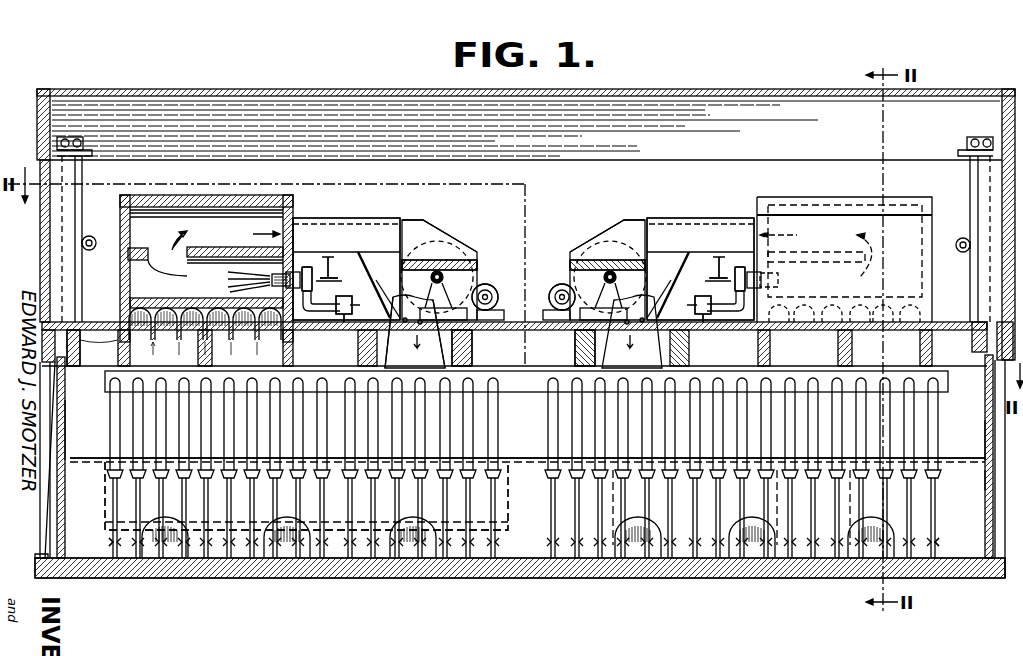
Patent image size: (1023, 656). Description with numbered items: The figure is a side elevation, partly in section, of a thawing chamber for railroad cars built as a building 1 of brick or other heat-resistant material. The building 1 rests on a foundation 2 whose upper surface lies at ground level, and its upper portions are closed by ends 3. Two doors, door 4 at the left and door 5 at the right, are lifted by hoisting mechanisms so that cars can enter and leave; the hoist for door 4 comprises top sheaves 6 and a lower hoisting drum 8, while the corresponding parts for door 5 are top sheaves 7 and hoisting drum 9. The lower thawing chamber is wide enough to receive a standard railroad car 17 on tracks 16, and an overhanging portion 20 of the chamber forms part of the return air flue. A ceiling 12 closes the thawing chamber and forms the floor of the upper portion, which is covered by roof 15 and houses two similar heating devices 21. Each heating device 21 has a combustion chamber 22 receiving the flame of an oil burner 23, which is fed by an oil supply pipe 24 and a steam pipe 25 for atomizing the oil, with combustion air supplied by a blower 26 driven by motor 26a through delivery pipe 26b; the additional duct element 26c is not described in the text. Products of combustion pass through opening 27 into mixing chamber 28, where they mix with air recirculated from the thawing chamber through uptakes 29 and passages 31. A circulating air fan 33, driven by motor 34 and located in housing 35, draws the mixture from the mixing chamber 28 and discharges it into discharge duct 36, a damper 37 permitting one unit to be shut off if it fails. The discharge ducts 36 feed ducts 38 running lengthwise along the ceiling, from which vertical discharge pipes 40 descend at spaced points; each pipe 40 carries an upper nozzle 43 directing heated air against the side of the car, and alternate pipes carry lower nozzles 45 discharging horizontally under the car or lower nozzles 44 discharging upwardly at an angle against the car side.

The building 1 is at (528, 421).
The foundation 2 is at (496, 578).
The ends 3 is at (50, 227).
The door 4 is at (66, 430).
The door 5 is at (993, 480).
The top sheaves 6 is at (68, 140).
The top sheaves 7 is at (982, 140).
The hoisting drum 8 is at (93, 238).
The hoisting drum 9 is at (960, 252).
The ceiling 12 is at (78, 335).
The roof 15 is at (668, 92).
The tracks 16 is at (1002, 578).
The railroad car 17 is at (105, 502).
The overhanging portion 20 is at (984, 436).
The heating device 21 is at (513, 263).
The combustion chamber 22 is at (222, 290).
The oil burner 23 is at (306, 265).
The oil supply pipe 24 is at (328, 257).
The steam pipe 25 is at (340, 296).
The combustion air blower 26 is at (365, 256).
The motor 26a is at (360, 290).
The delivery pipe 26b is at (344, 316).
The duct 26c is at (684, 282).
The opening 27 is at (902, 242).
The mixing chamber 28 is at (242, 242).
The uptakes 29 is at (896, 526).
The passages 31 is at (118, 352).
The circulating air fan 33 is at (455, 262).
The motor 34 is at (498, 288).
The housing 35 is at (428, 232).
The discharge duct 36 is at (470, 350).
The damper 37 is at (418, 328).
The ducts 38 is at (128, 388).
The vertical discharge pipes 40 is at (110, 446).
The upper nozzles 43 is at (108, 474).
The lower nozzles 44 is at (108, 547).
The lower nozzles 45 is at (182, 558).